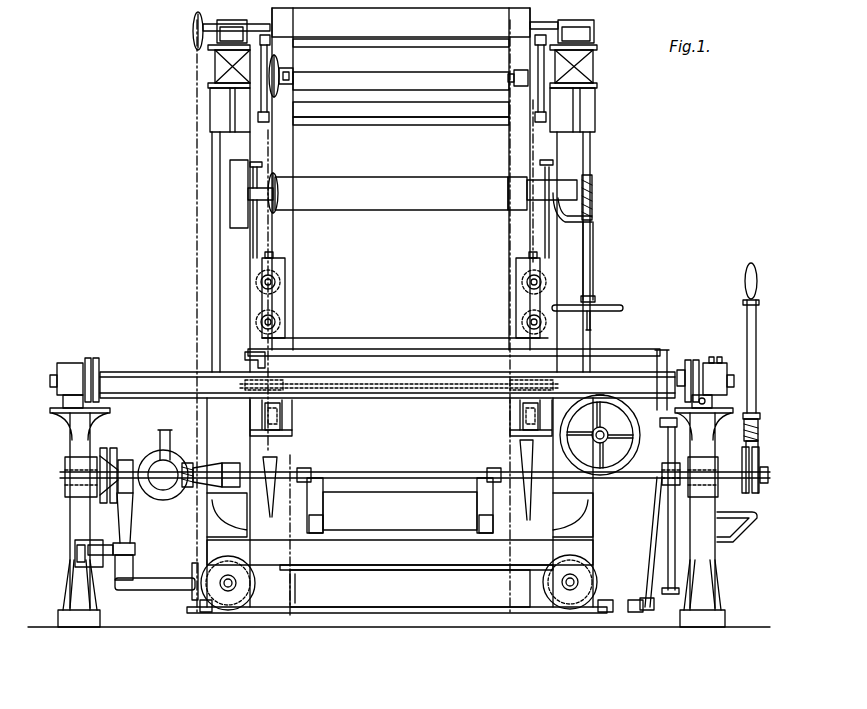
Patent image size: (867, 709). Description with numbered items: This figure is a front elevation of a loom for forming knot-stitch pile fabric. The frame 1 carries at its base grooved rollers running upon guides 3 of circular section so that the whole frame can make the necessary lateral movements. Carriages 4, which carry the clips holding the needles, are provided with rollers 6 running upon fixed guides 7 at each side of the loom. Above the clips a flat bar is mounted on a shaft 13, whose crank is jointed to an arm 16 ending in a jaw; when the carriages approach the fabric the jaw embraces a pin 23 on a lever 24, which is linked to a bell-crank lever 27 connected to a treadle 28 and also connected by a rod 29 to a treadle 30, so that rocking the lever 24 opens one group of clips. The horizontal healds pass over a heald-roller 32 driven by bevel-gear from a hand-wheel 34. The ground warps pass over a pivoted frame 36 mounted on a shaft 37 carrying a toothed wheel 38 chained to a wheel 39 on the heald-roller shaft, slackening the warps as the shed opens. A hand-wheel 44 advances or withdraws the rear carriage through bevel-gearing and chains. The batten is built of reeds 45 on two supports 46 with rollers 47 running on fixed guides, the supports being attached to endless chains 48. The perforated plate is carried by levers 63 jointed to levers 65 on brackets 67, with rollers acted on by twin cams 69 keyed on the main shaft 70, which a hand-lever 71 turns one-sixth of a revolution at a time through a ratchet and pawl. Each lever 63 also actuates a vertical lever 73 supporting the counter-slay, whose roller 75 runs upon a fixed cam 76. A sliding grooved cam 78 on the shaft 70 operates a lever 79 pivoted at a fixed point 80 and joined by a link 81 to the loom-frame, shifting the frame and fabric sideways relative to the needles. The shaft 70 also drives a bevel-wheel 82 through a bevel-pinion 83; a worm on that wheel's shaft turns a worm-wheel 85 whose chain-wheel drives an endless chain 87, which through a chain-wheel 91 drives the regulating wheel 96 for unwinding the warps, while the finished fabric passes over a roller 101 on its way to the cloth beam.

The frame 1 is at (400, 554).
The roller 101 is at (410, 588).
The guides 3 is at (590, 612).
The carriages 4 is at (387, 385).
The rollers 6 is at (718, 357).
The fixed guides 7 is at (712, 400).
The shaft 13 is at (552, 352).
The arm 16 is at (664, 348).
The pin 23 is at (406, 583).
The lever 24 is at (658, 428).
The bell-crank lever 27 is at (678, 510).
The treadle 28 is at (688, 566).
The rod 29 is at (642, 543).
The treadle 30 is at (639, 614).
The heald-roller 32 is at (401, 193).
The hand-wheel 34 is at (587, 252).
The frame 36 is at (518, 70).
The shaft 37 is at (401, 90).
The toothed wheel 38 is at (215, 68).
The wheel 39 is at (280, 194).
The hand-wheel 44 is at (628, 416).
The reeds 45 is at (396, 346).
The supports 46 is at (284, 306).
The rollers 47 is at (546, 323).
The endless chains 48 is at (280, 214).
The levers 63 is at (556, 411).
The levers 65 is at (405, 415).
The brackets 67 is at (402, 480).
The twin cams 69 is at (399, 513).
The main shaft 70 is at (620, 478).
The hand-lever 71 is at (758, 328).
The vertical lever 73 is at (401, 415).
The roller 75 is at (496, 468).
The fixed cam 76 is at (495, 485).
The sliding grooved cam 78 is at (118, 458).
The lever 79 is at (130, 520).
The fixed point 80 is at (135, 548).
The link 81 is at (160, 578).
The bevel-wheel 82 is at (170, 498).
The bevel-pinion 83 is at (190, 462).
The worm-wheel 85 is at (162, 435).
The endless chain 87 is at (197, 193).
The chain-wheel 91 is at (219, 31).
The wheel 96 is at (401, 27).